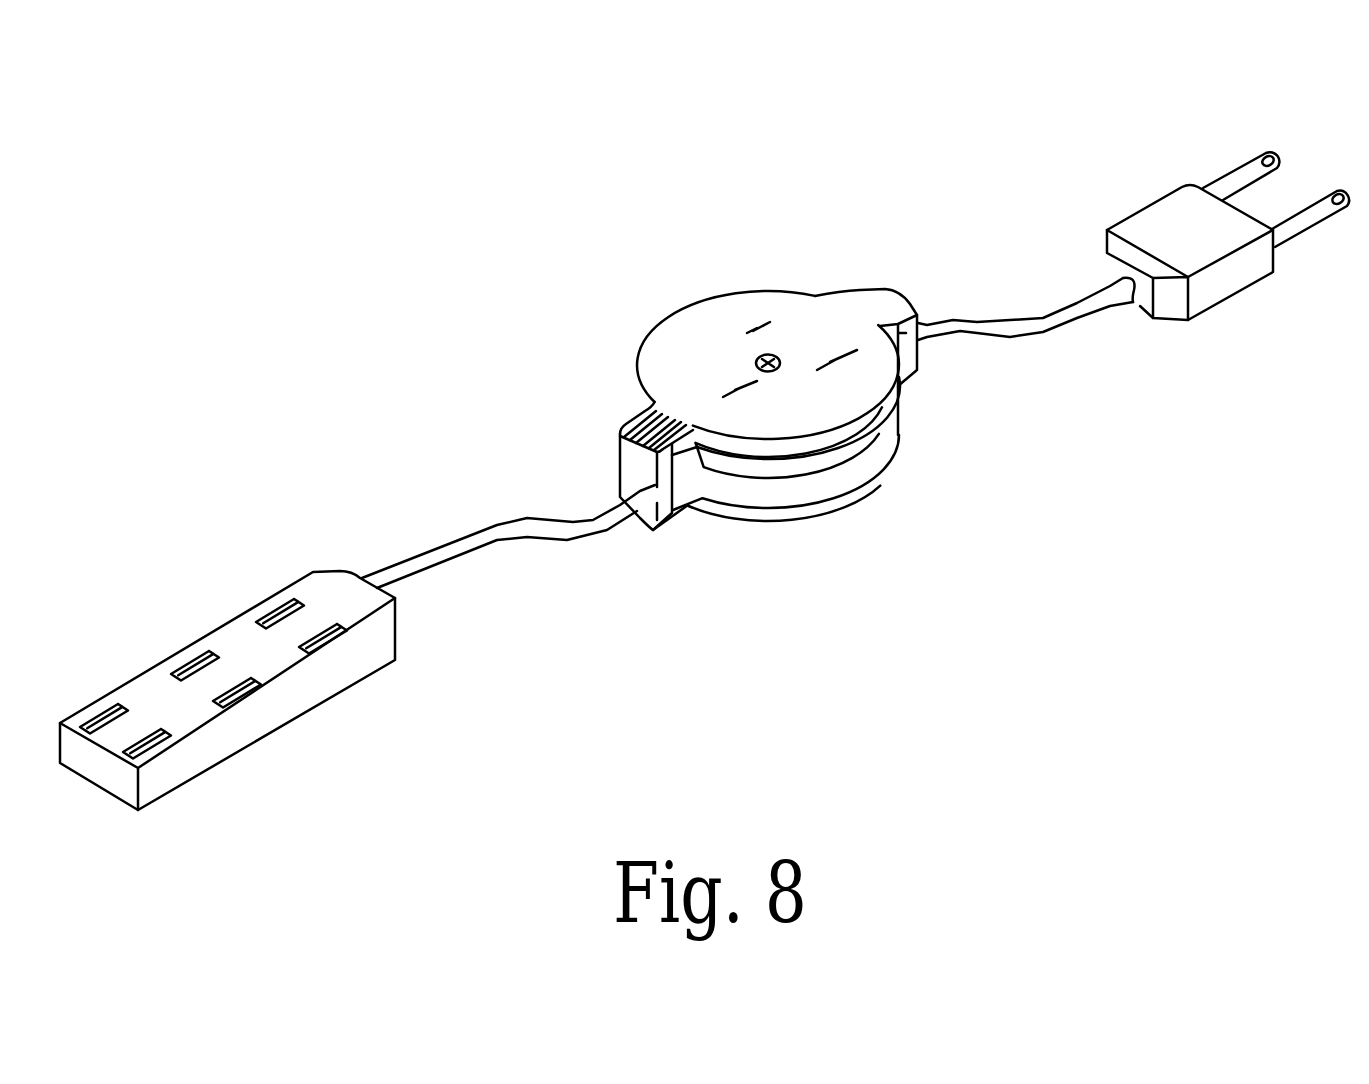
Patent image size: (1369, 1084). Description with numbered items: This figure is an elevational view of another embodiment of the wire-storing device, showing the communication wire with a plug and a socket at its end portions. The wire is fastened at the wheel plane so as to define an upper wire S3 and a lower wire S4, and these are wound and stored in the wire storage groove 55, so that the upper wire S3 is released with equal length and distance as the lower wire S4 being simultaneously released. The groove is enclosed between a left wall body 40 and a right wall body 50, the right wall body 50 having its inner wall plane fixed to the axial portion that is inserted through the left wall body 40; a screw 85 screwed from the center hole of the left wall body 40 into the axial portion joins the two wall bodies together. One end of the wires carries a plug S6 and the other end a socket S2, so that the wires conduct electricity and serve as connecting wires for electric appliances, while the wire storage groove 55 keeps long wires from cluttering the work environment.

The left wall body 40 is at (780, 308).
The screw 85 is at (767, 360).
The right wall body 50 is at (873, 477).
The wire storage groove 55 is at (830, 473).
The socket S2 is at (290, 705).
The lower wire S4 is at (493, 538).
The upper wire S3 is at (1012, 332).
The plug S6 is at (1187, 230).